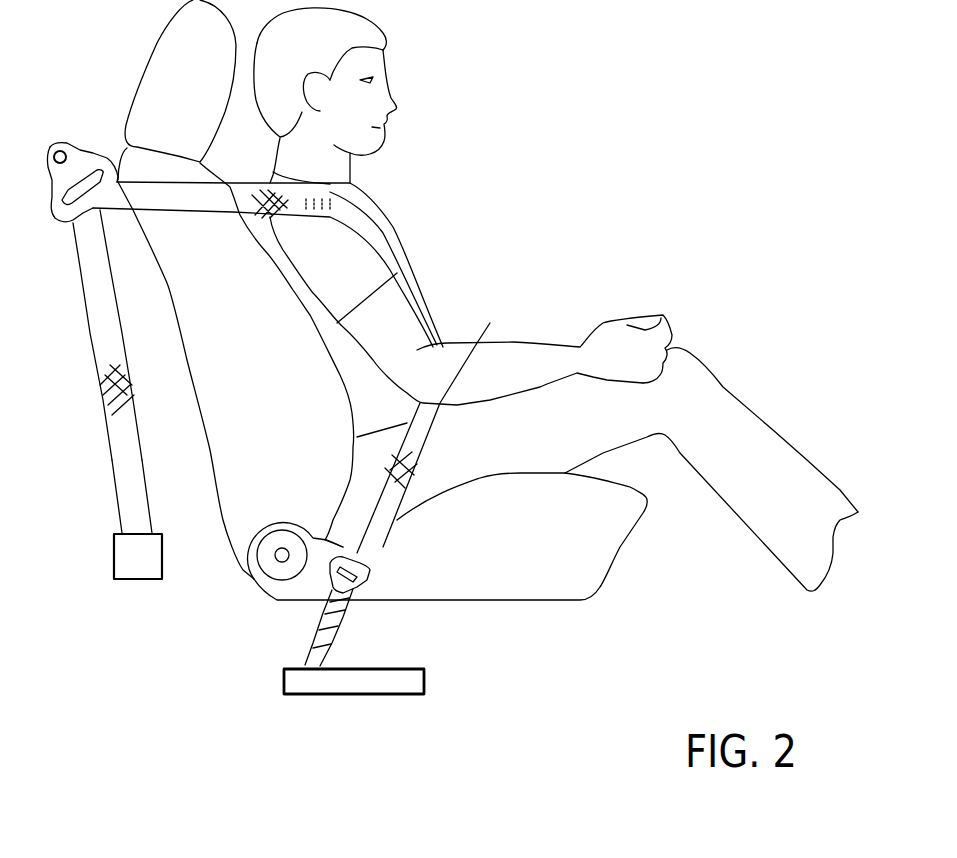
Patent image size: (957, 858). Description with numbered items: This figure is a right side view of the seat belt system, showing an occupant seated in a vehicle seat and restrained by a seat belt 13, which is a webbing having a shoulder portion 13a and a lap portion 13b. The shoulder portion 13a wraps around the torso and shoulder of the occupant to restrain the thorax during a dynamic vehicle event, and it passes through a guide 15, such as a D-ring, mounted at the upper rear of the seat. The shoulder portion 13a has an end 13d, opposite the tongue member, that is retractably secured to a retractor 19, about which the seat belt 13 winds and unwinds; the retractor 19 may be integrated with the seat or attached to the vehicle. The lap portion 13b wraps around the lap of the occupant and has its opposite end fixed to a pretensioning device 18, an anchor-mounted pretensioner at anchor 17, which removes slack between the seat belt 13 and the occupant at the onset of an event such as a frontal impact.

The seat belt 13 is at (100, 289).
The shoulder portion 13a is at (370, 225).
The lap portion 13b is at (490, 323).
The end 13d is at (131, 518).
The guide 15 is at (57, 142).
The anchor 17 is at (368, 598).
The pretensioning device 18 is at (275, 678).
The retractor 19 is at (149, 570).